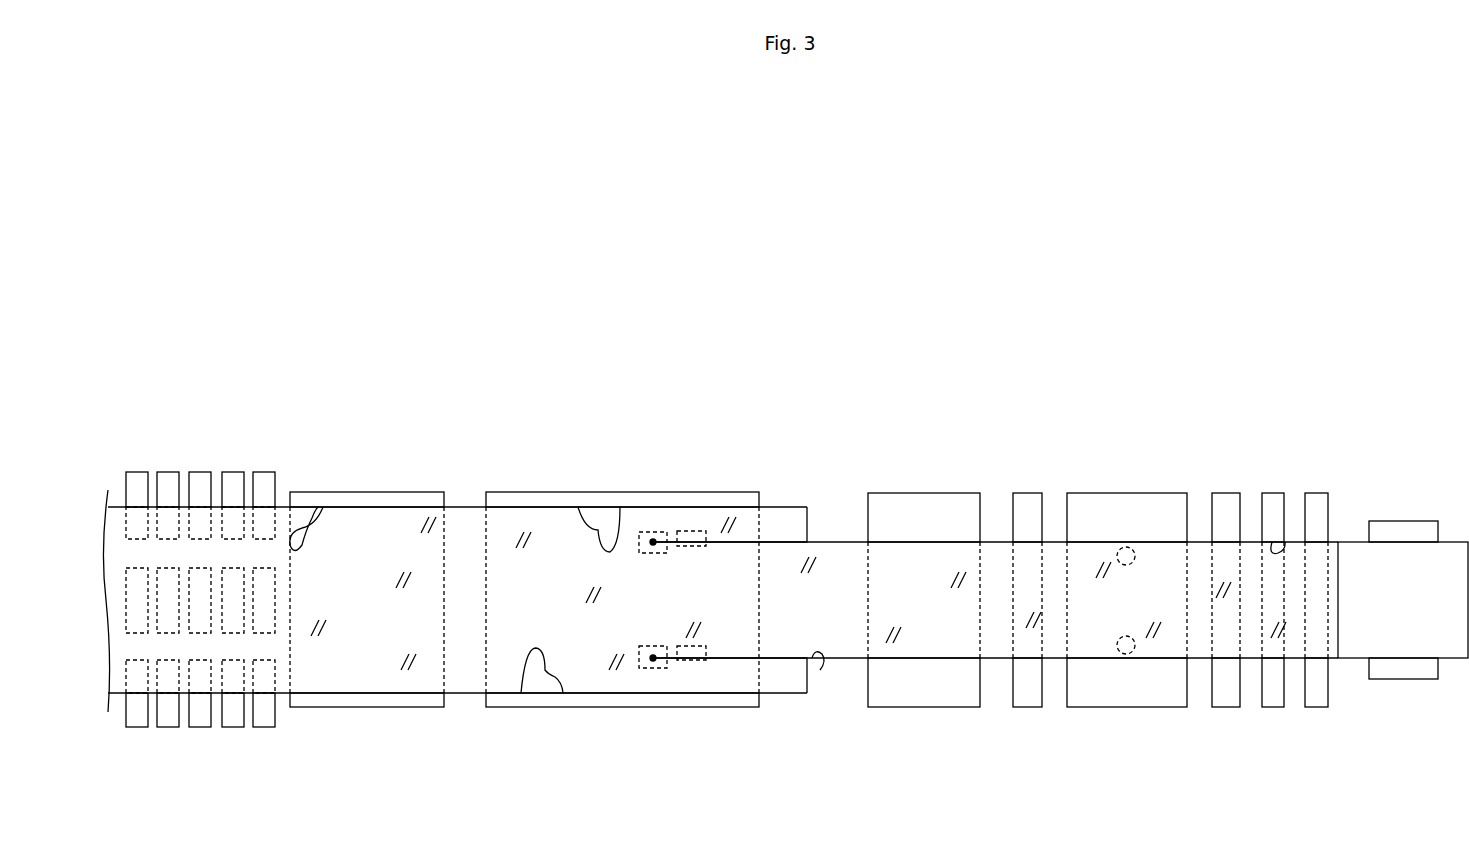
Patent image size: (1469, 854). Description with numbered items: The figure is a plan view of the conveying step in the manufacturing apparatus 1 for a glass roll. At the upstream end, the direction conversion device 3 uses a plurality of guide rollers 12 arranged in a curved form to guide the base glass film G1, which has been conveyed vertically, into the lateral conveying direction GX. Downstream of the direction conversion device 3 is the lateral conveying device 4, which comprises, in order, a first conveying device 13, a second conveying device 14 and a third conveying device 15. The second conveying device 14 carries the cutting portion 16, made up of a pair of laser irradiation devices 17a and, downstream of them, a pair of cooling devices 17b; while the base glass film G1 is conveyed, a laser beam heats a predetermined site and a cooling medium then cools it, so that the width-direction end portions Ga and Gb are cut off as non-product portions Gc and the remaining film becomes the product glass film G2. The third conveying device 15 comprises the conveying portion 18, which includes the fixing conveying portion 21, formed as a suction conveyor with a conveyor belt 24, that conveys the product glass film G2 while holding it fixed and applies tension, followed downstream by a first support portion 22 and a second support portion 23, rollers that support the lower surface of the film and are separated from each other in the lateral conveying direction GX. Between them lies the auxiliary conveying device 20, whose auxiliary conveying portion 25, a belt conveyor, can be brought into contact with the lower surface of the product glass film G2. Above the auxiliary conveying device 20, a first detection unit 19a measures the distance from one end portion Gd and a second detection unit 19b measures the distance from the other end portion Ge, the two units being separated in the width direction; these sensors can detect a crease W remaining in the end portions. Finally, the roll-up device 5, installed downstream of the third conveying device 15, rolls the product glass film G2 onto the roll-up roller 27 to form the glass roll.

The manufacturing apparatus 1 is at (1064, 250).
The direction conversion device 3 is at (285, 579).
The lateral conveying device 4 is at (668, 567).
The roll-up device 5 is at (1403, 556).
The guide rollers 12 is at (136, 482).
The first conveying device 13 is at (357, 720).
The second conveying device 14 is at (510, 720).
The third conveying device 15 is at (1194, 631).
The cutting portion 16 is at (675, 604).
The laser irradiation devices 17a is at (646, 530).
The cooling devices 17b is at (699, 603).
The conveying portion 18 is at (956, 618).
The first detection unit 19a is at (1134, 553).
The second detection unit 19b is at (1134, 648).
The auxiliary conveying device 20 is at (1112, 490).
The fixing conveying portion 21 is at (958, 490).
The first support portion 22 is at (1027, 705).
The second support portion 23 is at (1222, 705).
The conveyor belt 24 is at (919, 508).
The auxiliary conveying portion 25 is at (1168, 705).
The roll-up roller 27 is at (1402, 680).
The crease W is at (321, 505).
The lateral conveying direction GX is at (820, 293).
The end portion Ga is at (461, 500).
The end portion Gb is at (440, 700).
The non-product portions Gc is at (782, 520).
The end portion Gd is at (822, 540).
The end portion Ge is at (851, 703).
The base glass film G1 is at (463, 702).
The product glass film G2 is at (848, 545).